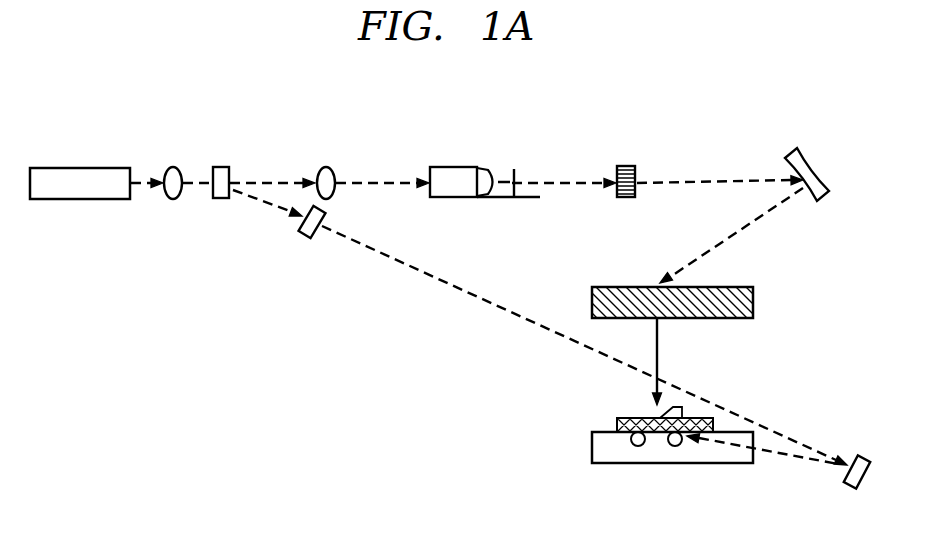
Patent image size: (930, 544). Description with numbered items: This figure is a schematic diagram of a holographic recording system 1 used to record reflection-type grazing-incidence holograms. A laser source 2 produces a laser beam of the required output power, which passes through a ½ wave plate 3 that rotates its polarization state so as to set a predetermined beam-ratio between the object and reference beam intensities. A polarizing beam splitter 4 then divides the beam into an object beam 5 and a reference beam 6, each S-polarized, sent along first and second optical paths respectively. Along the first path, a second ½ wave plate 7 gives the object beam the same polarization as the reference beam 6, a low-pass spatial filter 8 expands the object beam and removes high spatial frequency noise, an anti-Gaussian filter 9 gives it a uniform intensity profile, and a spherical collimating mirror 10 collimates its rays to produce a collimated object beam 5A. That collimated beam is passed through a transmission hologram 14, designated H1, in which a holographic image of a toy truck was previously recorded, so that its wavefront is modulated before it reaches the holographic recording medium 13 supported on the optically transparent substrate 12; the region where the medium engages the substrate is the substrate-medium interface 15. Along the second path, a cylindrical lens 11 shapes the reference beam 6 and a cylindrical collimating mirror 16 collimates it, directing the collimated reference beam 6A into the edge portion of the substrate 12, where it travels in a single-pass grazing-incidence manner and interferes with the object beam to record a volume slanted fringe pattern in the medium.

The holographic recording system 1 is at (357, 378).
The laser source 2 is at (87, 167).
The ½ wave plate 3 is at (175, 167).
The polarizing beam splitter 4 is at (222, 167).
The object beam 5 is at (279, 181).
The collimated object beam 5A is at (744, 225).
The reference beam 6 is at (261, 200).
The collimated reference beam 6A is at (794, 462).
The second ½ wave plate 7 is at (327, 167).
The low-pass spatial filter 8 is at (464, 166).
The anti-Gaussian filter 9 is at (628, 165).
The spherical collimating mirror 10 is at (822, 165).
The cylindrical lens 11 is at (306, 240).
The optically transparent substrate 12 is at (666, 463).
The holographic recording medium 13 is at (620, 416).
The transmission hologram 14 is at (728, 287).
The substrate-medium interface 15 is at (662, 432).
The cylindrical collimating mirror 16 is at (853, 456).
The transmission hologram H1 is at (772, 304).